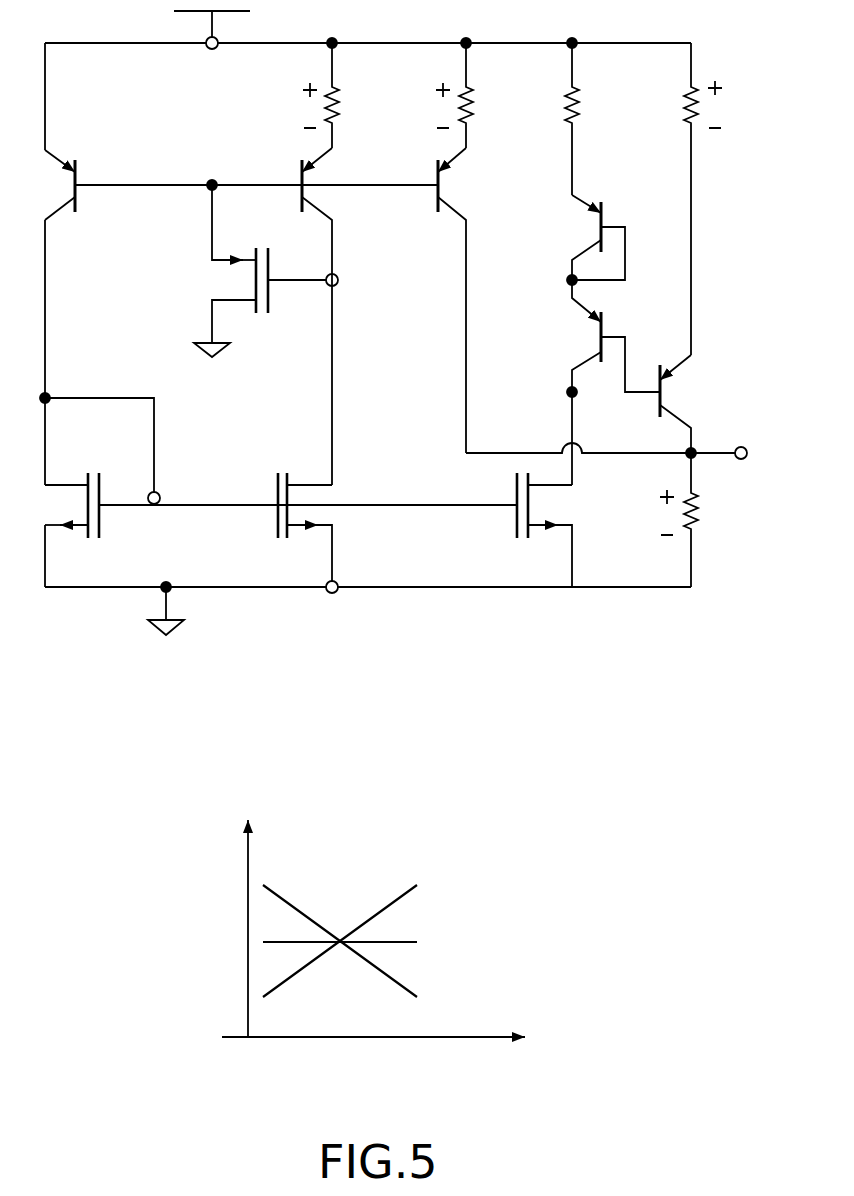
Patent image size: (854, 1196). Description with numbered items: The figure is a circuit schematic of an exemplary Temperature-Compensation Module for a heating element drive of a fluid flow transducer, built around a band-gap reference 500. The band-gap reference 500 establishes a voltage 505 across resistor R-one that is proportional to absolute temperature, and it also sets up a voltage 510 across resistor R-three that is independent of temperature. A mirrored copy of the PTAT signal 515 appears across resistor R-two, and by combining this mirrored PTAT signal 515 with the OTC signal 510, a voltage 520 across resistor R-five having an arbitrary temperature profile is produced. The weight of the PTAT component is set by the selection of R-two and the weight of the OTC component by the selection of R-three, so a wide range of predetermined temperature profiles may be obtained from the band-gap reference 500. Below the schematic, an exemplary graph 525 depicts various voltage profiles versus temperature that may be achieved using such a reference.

The band-gap reference 500 is at (408, 354).
The voltage 505 is at (231, 132).
The voltage 510 is at (753, 157).
The mirrored copy of the PTAT signal 515 is at (438, 122).
The voltage 520 is at (644, 541).
The graph 525 is at (479, 856).